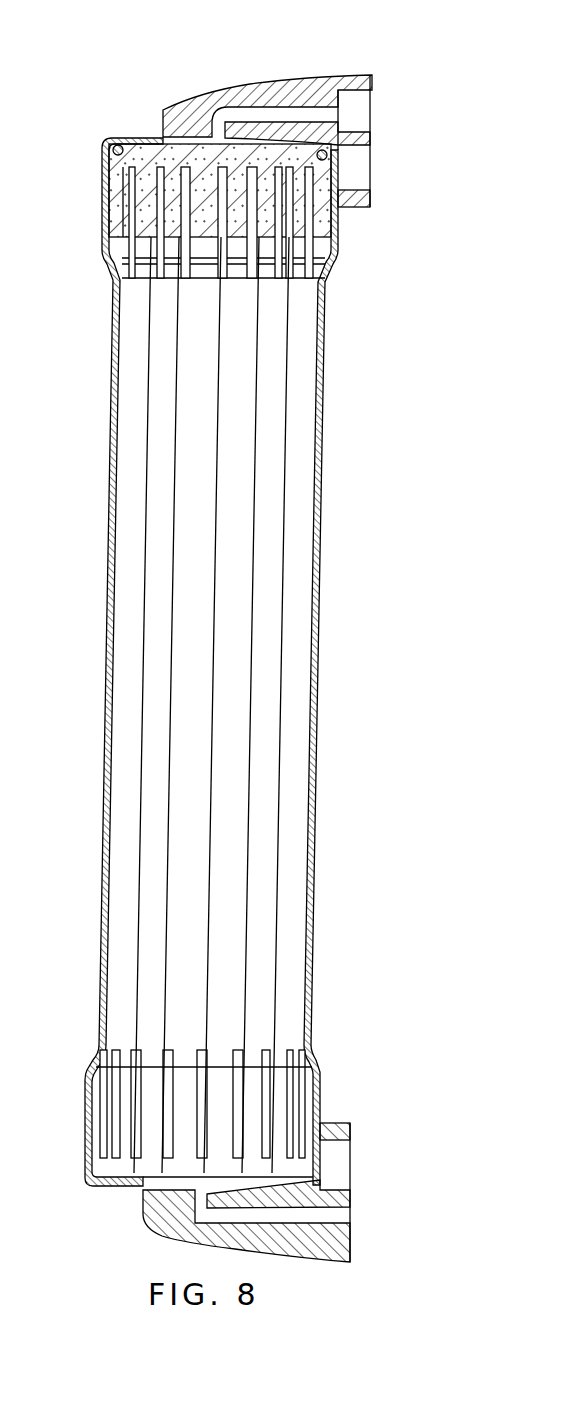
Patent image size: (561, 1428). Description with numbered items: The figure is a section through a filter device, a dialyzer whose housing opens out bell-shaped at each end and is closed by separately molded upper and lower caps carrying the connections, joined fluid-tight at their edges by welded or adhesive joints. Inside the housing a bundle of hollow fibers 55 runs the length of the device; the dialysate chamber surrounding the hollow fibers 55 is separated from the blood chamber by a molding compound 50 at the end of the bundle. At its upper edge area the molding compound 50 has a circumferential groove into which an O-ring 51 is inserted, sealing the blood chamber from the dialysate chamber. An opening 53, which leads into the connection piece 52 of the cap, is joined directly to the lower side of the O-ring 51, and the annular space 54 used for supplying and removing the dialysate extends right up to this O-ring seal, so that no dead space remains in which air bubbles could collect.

The molding compound 50 is at (177, 155).
The O-ring 51 is at (112, 148).
The connection piece 52 is at (363, 150).
The opening 53 is at (336, 165).
The annular space 54 is at (117, 210).
The hollow fibers 55 is at (287, 358).